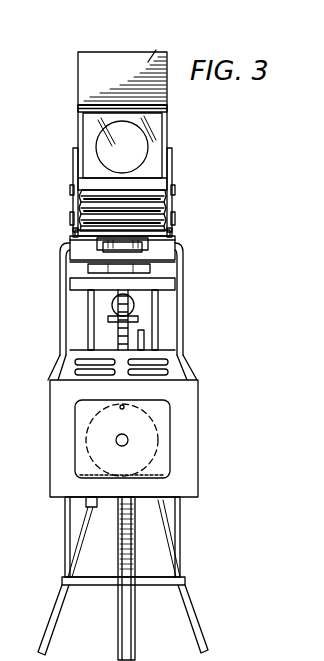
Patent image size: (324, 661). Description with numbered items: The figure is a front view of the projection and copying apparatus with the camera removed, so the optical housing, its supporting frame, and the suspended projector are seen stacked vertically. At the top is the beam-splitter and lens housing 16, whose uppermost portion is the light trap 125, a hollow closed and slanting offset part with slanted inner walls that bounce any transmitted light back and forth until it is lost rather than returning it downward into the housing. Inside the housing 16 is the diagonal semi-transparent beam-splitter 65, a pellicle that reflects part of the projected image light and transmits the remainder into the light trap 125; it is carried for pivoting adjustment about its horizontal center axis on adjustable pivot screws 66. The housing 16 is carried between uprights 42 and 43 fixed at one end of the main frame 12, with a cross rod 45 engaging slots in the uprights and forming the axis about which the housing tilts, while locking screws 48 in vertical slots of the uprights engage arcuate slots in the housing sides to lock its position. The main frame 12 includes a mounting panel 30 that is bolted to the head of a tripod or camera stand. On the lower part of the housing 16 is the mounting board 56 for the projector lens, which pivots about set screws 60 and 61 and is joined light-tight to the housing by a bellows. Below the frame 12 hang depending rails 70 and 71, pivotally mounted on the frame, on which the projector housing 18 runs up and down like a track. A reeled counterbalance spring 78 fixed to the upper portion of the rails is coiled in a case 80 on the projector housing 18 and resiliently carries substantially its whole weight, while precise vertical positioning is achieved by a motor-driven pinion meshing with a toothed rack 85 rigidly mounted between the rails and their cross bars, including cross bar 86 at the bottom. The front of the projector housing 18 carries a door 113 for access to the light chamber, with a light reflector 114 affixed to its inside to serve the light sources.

The light trap 125 is at (126, 69).
The beam-splitter and lens housing 16 is at (80, 108).
The beam-splitter 65 is at (166, 124).
The adjustable pivot screws 66 is at (78, 139).
The upright 42 is at (73, 156).
The upright 43 is at (172, 160).
The cross rod 45 is at (70, 190).
The locking screws 48 is at (70, 218).
The set screw 60 is at (74, 233).
The set screw 61 is at (172, 233).
The main frame 12 is at (178, 240).
The mounting board 56 is at (150, 237).
The mounting panel 30 is at (158, 264).
The depending rail 70 is at (62, 328).
The depending rail 71 is at (180, 330).
The counterbalance spring 78 is at (88, 310).
The projector housing 18 is at (198, 463).
The door 113 is at (165, 420).
The light reflector 114 is at (95, 450).
The case 80 is at (93, 507).
The toothed rack 85 is at (128, 563).
The cross bar 86 is at (157, 586).